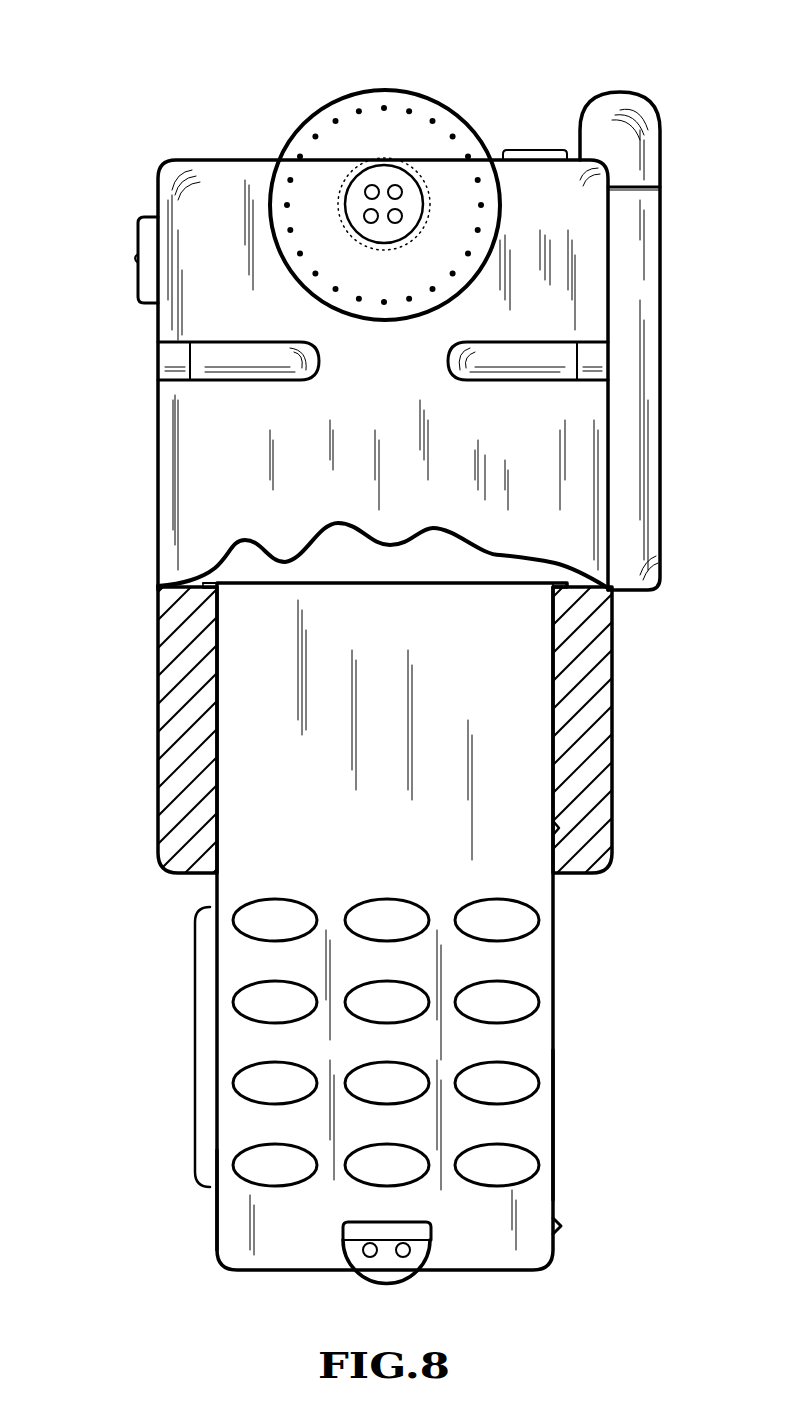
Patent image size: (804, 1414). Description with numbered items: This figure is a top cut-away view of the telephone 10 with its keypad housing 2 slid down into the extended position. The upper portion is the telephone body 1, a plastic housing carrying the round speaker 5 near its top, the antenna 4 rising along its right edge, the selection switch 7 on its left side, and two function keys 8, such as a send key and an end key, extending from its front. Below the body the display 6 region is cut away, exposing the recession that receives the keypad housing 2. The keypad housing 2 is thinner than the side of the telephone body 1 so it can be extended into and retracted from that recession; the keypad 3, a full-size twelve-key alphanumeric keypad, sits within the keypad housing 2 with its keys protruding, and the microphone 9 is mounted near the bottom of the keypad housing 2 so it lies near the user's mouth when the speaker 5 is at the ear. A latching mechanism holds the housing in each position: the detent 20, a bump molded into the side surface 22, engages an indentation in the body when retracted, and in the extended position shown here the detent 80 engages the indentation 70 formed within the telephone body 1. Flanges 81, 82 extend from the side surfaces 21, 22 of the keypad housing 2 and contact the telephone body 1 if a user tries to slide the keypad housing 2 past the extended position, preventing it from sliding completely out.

The telephone 10 is at (107, 50).
The telephone body 1 is at (156, 443).
The keypad housing 2 is at (538, 962).
The keypad 3 is at (195, 1047).
The antenna 4 is at (648, 118).
The speaker 5 is at (327, 106).
The display 6 is at (164, 641).
The selection switch 7 is at (142, 240).
The function keys 8 is at (258, 343).
The microphone 9 is at (415, 1276).
The detent 20 is at (561, 1225).
The side surface 21 is at (212, 1221).
The side surface 22 is at (559, 1121).
The indentation 70 is at (560, 830).
The detent 80 is at (550, 828).
The flange 81 is at (206, 585).
The flange 82 is at (556, 583).